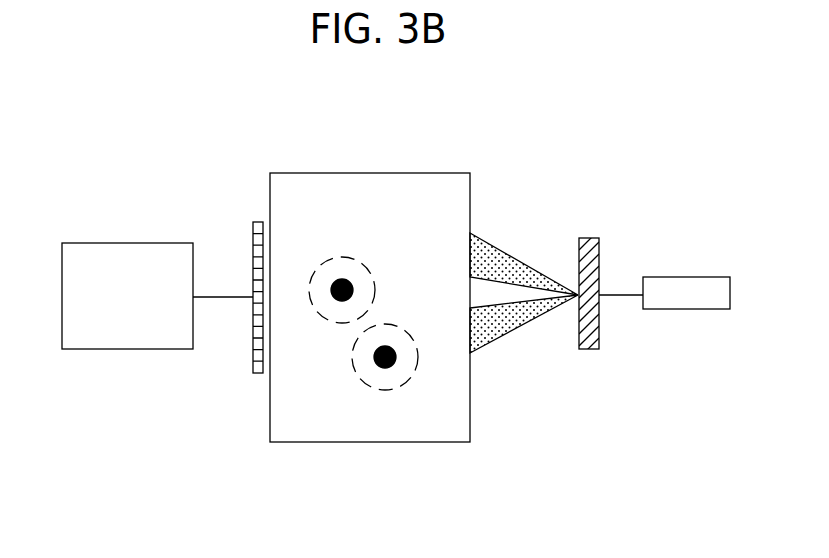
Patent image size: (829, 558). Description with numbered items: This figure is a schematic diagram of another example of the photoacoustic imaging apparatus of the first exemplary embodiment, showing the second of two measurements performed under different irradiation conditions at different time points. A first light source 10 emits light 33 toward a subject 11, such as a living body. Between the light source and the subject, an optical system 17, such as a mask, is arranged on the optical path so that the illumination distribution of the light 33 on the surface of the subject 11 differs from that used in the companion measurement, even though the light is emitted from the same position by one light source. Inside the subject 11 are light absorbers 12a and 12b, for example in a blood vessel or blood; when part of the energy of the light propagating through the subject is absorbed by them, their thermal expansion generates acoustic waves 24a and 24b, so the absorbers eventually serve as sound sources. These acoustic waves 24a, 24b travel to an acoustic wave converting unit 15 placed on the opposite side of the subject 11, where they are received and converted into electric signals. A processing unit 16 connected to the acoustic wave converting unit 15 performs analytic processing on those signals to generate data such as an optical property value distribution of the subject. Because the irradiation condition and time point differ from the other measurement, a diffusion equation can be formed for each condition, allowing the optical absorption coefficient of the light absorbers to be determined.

The first light source 10 is at (698, 278).
The subject 11 is at (437, 180).
The light absorber 12a is at (332, 277).
The light absorber 12b is at (377, 365).
The acoustic wave converting unit 15 is at (256, 375).
The processing unit 16 is at (83, 332).
The optical system 17 is at (592, 233).
The acoustic wave 24a is at (367, 264).
The acoustic wave 24b is at (417, 367).
The light 33 is at (492, 249).